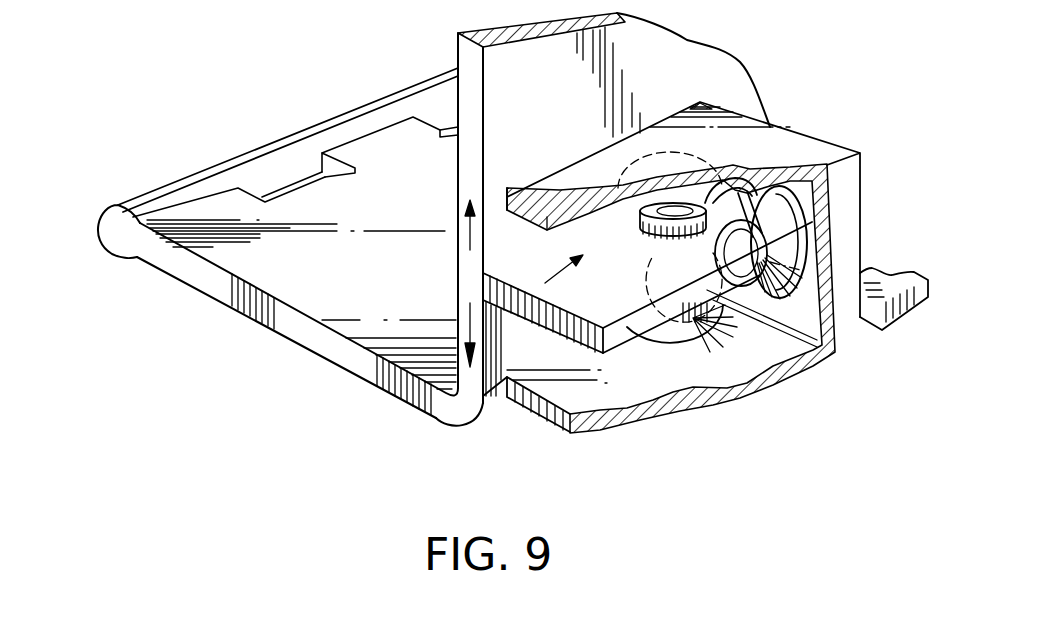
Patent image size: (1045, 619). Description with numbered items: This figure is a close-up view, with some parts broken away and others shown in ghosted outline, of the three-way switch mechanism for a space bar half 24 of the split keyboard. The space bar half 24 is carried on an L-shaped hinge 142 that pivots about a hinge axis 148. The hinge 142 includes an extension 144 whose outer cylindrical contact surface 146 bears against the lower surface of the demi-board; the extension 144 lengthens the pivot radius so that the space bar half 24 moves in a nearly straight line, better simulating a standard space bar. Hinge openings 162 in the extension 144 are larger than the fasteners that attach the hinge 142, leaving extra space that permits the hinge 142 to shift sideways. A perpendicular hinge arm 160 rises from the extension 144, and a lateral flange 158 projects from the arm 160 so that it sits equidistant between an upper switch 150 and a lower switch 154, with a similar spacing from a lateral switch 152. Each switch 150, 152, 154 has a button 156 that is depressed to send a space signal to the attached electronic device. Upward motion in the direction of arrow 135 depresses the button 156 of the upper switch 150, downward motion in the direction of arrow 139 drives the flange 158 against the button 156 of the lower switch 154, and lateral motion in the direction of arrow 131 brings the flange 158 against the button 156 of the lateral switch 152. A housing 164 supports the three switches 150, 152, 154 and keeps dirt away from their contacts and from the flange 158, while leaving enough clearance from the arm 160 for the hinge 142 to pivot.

The space bar half 24 is at (347, 403).
The arrow 131 is at (546, 276).
The arrow 135 is at (466, 225).
The arrow 139 is at (467, 315).
The L-shaped hinge 142 is at (322, 306).
The extension 144 is at (372, 283).
The outer cylindrical contact surface 146 is at (187, 187).
The hinge axis 148 is at (120, 233).
The upper switch 150 is at (600, 141).
The lateral switch 152 is at (777, 253).
The lower switch 154 is at (717, 340).
The button 156 is at (672, 238).
The lateral flange 158 is at (590, 330).
The perpendicular hinge arm 160 is at (552, 85).
The hinge openings 162 is at (293, 183).
The housing 164 is at (802, 150).